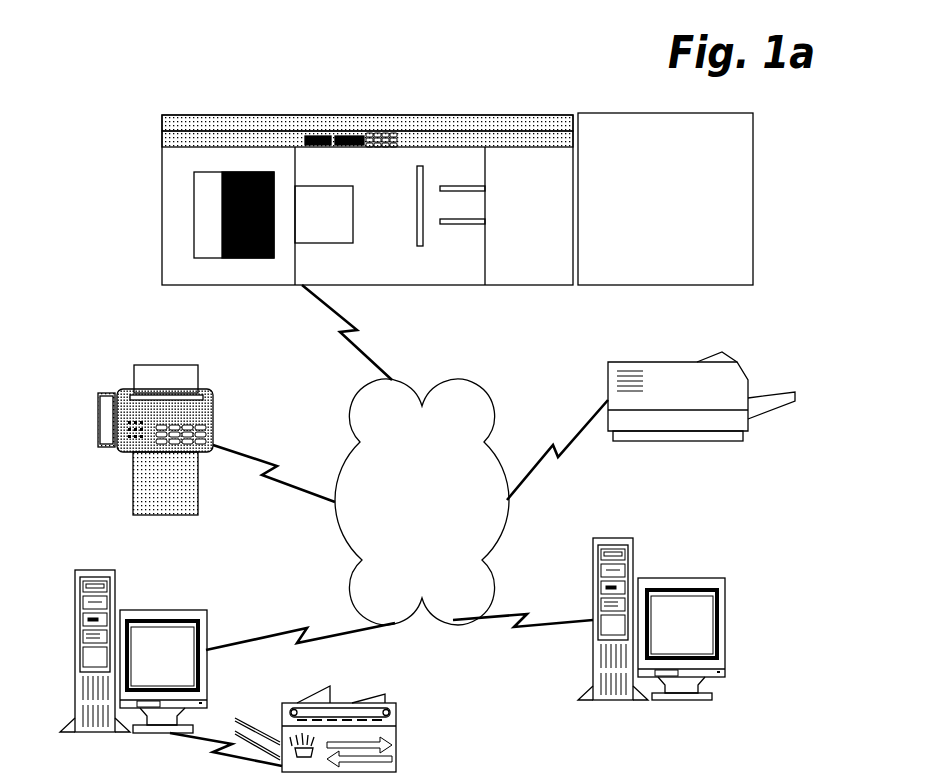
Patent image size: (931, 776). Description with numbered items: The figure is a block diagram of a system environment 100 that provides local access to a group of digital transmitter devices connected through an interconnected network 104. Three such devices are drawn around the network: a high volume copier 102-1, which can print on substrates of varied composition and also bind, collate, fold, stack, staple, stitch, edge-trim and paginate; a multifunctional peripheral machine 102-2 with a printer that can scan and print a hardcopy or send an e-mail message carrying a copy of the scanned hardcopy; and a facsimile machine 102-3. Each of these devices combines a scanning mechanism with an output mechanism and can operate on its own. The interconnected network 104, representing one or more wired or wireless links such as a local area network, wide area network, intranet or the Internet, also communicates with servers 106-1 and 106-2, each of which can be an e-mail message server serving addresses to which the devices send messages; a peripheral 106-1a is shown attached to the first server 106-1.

The system environment 100 is at (236, 59).
The high volume copier 102-1 is at (162, 115).
The multifunctional peripheral machine 102-2 is at (677, 362).
The facsimile machine 102-3 is at (168, 370).
The interconnected network 104 is at (407, 467).
The server 106-1 is at (90, 568).
The scanner peripheral 106-1a is at (380, 702).
The server 106-2 is at (682, 577).